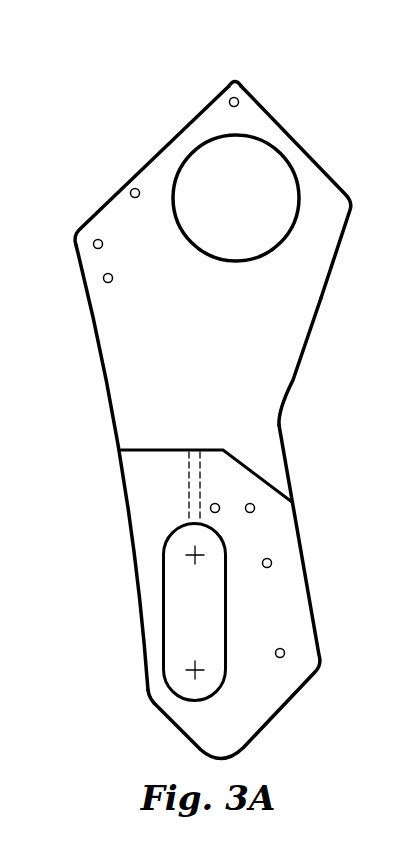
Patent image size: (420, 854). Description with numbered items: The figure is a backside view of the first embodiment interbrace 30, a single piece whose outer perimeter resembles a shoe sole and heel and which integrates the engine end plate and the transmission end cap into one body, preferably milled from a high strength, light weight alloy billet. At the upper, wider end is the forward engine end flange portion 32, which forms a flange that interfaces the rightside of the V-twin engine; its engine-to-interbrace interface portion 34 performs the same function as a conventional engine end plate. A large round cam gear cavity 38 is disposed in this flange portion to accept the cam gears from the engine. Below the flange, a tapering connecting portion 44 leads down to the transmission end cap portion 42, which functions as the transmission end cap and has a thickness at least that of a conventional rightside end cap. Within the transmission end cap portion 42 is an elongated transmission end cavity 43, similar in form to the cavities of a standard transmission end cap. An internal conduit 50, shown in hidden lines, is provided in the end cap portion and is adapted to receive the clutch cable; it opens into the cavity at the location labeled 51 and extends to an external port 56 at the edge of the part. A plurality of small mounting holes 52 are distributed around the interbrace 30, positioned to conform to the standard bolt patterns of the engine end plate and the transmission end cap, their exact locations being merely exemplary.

The interbrace 30 is at (217, 418).
The engine end flange portion 32 is at (167, 165).
The engine-to-interbrace interface portion 34 is at (316, 163).
The cam gear cavity 38 is at (212, 156).
The transmission end cap portion 42 is at (253, 486).
The transmission end cavity 43 is at (138, 612).
The connecting portion 44 is at (297, 333).
The internal conduit 50 is at (190, 477).
The slot end 51 is at (187, 530).
The mounting holes 52 is at (103, 276).
The external port 56 is at (195, 448).